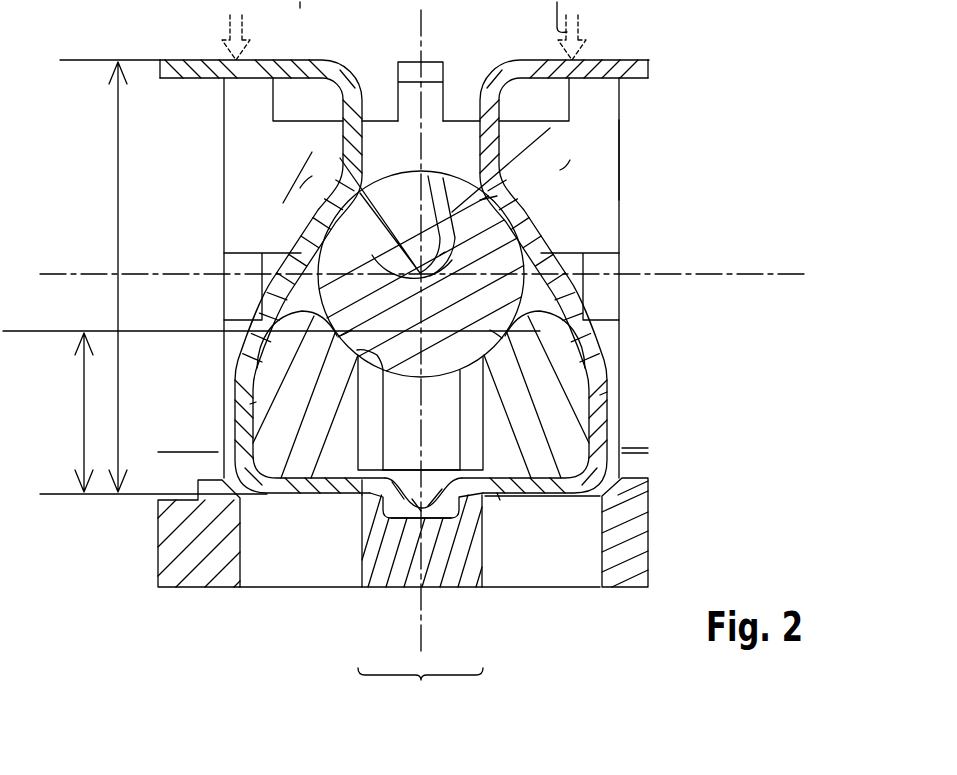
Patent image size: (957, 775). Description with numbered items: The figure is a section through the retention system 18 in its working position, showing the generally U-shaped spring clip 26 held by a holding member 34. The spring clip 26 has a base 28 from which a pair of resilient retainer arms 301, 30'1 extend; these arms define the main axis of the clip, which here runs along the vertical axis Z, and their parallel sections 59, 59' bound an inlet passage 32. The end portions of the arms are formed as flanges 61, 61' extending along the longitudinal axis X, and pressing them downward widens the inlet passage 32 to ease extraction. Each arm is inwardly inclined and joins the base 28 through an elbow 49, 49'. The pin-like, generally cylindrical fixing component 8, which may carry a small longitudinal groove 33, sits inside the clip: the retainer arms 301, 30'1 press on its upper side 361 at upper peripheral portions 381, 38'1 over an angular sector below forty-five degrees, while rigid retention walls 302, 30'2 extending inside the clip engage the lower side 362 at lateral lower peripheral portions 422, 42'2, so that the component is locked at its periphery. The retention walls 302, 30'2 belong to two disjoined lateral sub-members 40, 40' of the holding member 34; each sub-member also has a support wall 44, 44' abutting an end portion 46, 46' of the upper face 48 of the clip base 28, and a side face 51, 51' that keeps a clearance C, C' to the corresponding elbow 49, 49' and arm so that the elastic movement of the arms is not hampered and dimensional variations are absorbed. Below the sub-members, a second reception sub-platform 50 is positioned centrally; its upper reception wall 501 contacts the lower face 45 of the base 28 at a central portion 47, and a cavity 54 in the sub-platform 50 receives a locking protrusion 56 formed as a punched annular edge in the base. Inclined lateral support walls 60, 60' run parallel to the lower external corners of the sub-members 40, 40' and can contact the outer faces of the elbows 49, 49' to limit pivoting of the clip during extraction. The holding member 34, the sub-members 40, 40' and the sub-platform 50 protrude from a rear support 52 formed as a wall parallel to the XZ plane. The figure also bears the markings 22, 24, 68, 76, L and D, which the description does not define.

The shell (outer housing insert) 22 is at (386, 261).
The flange 61 is at (259, 46).
The flange 61' is at (562, 44).
The applied force 68 is at (230, 44).
The load direction arrow 24 is at (404, 35).
The force component 76 is at (302, 5).
The retention system 18 is at (662, 75).
The spring clip 26 is at (617, 243).
The inlet passage 32 is at (402, 153).
The longitudinal groove 33 is at (410, 220).
The first side 361 is at (443, 175).
The second side 362 is at (358, 372).
The parallel section 59 is at (297, 136).
The parallel section 59' is at (594, 136).
The rear support 52 is at (607, 147).
The resilient retainer arm 301 is at (340, 217).
The resilient retainer arm 30'1 is at (579, 178).
The retention wall 302 is at (283, 352).
The retention wall 30'2 is at (558, 379).
The fixing component 8 is at (497, 196).
The upper peripheral portion 381 is at (318, 268).
The upper peripheral portion 38'1 is at (473, 248).
The lateral lower peripheral portion 422 is at (345, 336).
The lateral lower peripheral portion 42'2 is at (470, 315).
The side face 51 is at (259, 273).
The side face 51' is at (610, 271).
The holding member 34 is at (207, 384).
The elbow 49 is at (213, 419).
The elbow 49' is at (657, 419).
The lateral sub-member 40 is at (262, 456).
The lateral sub-member 40' is at (604, 471).
The support wall 44 is at (319, 405).
The support wall 44' is at (522, 405).
The locking protrusion 56 is at (430, 490).
The inclined lateral support wall 60 is at (172, 533).
The inclined lateral support wall 60' is at (657, 532).
The end portion 46 is at (420, 564).
The end portion 46' is at (545, 580).
The upper face 48 is at (363, 480).
The second reception sub-platform 50 is at (363, 547).
The upper reception wall 501 is at (487, 497).
The lower face 45 is at (383, 575).
The cavity 54 is at (438, 515).
The base 28 is at (498, 490).
The central portion 47 is at (420, 686).
The longitudinal axis X is at (411, 261).
The vertical axis Z is at (433, 330).
The length dimension L is at (153, 277).
The depth dimension D is at (271, 411).
The clearance C is at (646, 380).
The clearance C' is at (191, 418).